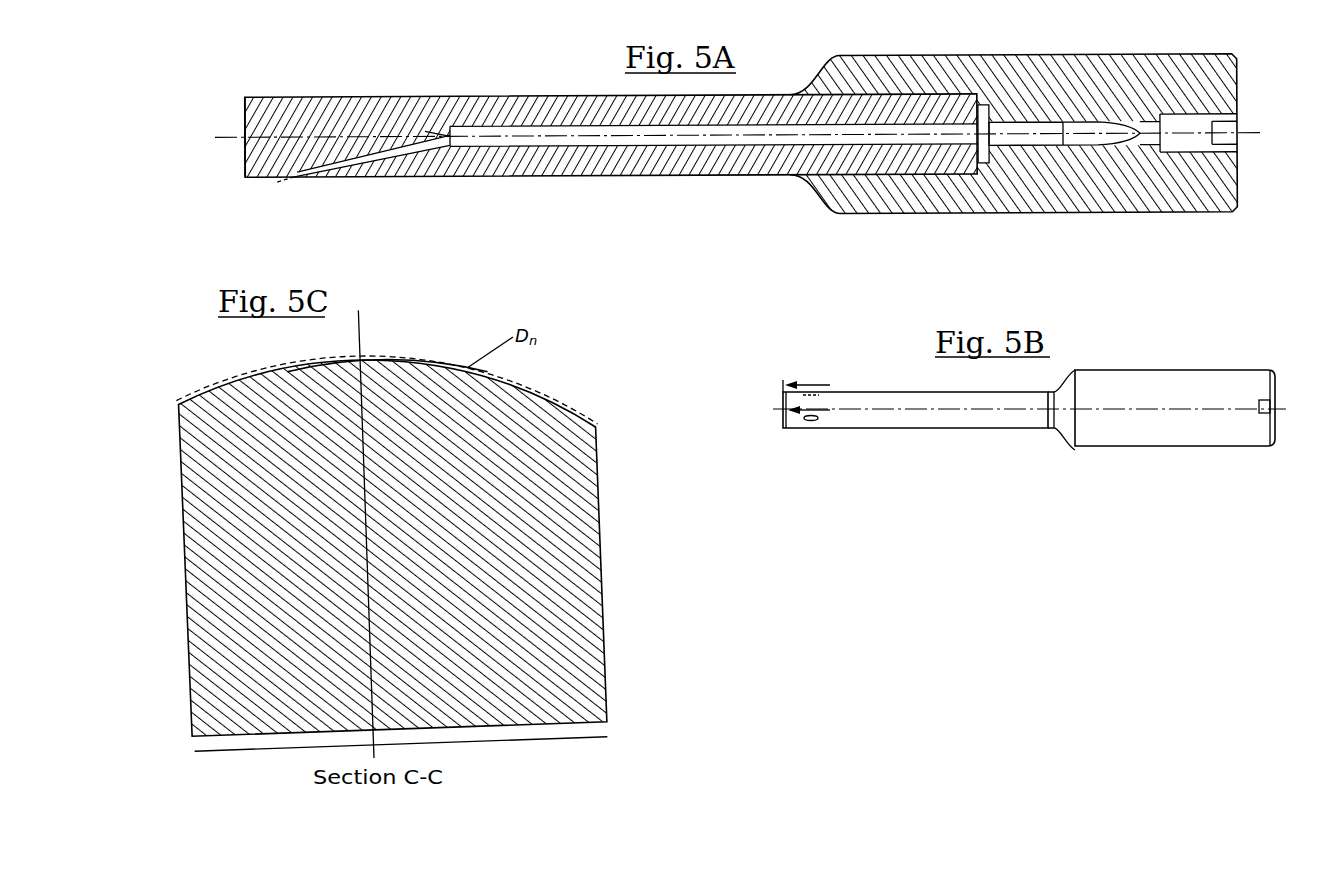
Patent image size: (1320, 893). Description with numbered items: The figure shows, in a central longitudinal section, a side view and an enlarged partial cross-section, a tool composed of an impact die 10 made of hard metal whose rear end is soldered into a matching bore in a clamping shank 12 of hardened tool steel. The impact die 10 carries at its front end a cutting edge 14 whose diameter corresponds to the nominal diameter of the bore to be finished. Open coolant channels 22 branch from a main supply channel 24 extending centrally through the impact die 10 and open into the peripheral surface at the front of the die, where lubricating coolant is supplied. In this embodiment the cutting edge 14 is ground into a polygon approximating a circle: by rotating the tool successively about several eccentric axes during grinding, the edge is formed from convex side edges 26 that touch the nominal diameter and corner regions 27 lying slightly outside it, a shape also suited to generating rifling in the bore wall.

In FIG. 5A, the impact die 10 is at (438, 95).
In FIG. 5B, the impact die 10 is at (949, 426).
In FIG. 5C, the impact die 10 is at (587, 523).
In FIG. 5A, the clamping shank 12 is at (1120, 204).
In FIG. 5B, the clamping shank 12 is at (1150, 430).
In FIG. 5A, the cutting edge 14 is at (244, 94).
In FIG. 5A, the coolant channel 22 is at (347, 170).
In FIG. 5B, the coolant channel 22 is at (812, 421).
In FIG. 5A, the main supply channel 24 is at (512, 143).
In FIG. 5C, the convex side edge 26 is at (537, 400).
In FIG. 5C, the corner region 27 is at (453, 368).